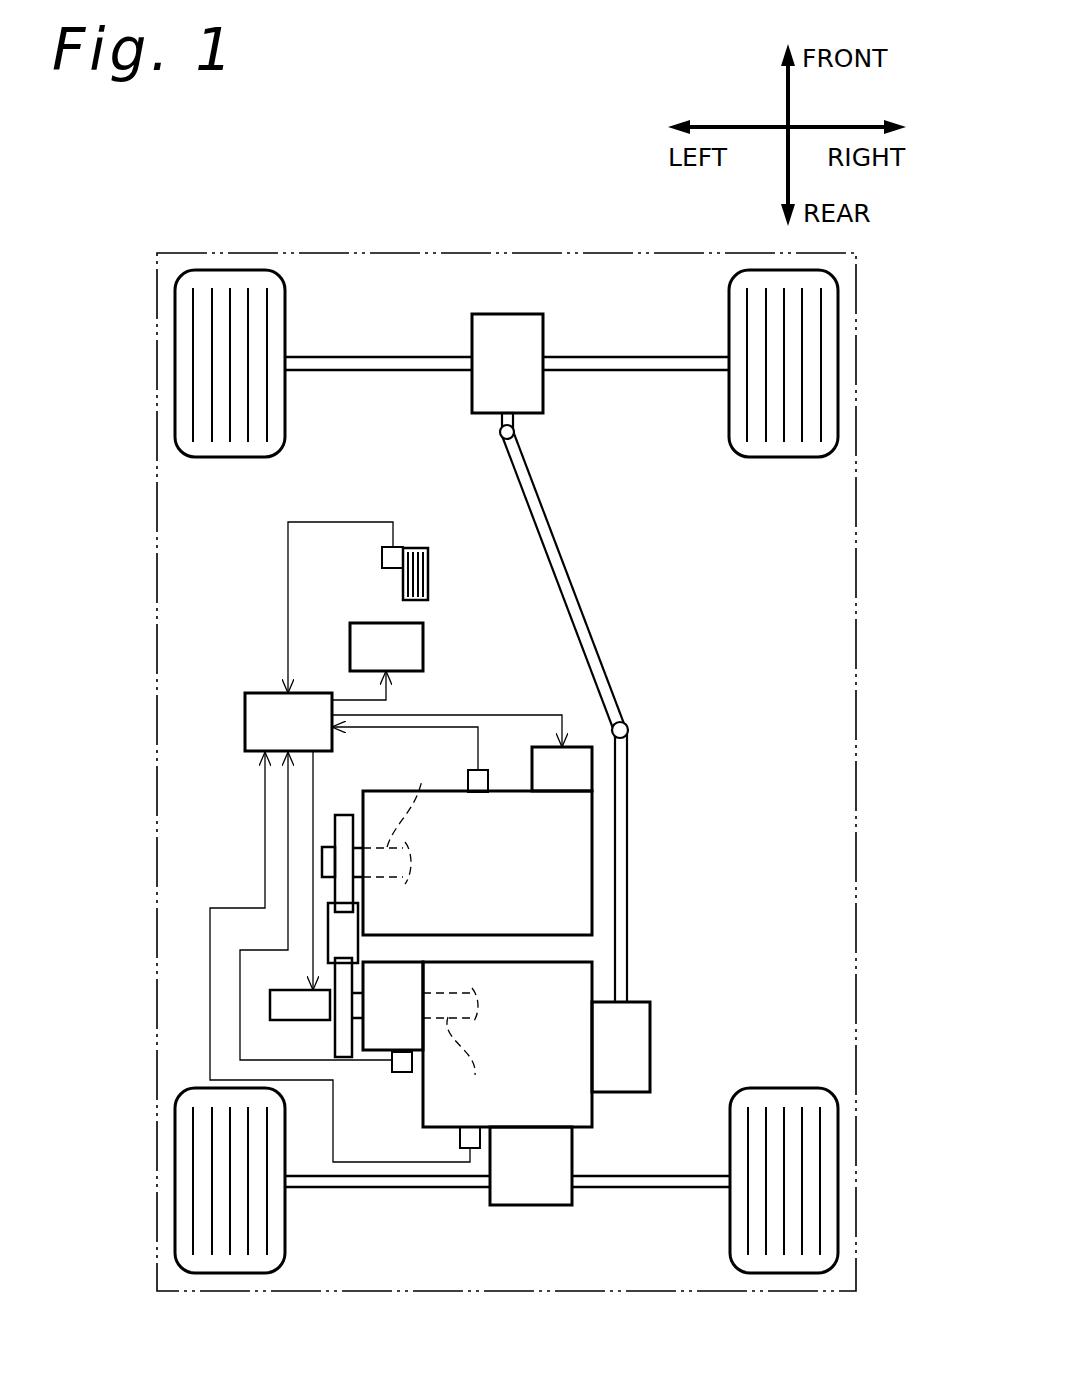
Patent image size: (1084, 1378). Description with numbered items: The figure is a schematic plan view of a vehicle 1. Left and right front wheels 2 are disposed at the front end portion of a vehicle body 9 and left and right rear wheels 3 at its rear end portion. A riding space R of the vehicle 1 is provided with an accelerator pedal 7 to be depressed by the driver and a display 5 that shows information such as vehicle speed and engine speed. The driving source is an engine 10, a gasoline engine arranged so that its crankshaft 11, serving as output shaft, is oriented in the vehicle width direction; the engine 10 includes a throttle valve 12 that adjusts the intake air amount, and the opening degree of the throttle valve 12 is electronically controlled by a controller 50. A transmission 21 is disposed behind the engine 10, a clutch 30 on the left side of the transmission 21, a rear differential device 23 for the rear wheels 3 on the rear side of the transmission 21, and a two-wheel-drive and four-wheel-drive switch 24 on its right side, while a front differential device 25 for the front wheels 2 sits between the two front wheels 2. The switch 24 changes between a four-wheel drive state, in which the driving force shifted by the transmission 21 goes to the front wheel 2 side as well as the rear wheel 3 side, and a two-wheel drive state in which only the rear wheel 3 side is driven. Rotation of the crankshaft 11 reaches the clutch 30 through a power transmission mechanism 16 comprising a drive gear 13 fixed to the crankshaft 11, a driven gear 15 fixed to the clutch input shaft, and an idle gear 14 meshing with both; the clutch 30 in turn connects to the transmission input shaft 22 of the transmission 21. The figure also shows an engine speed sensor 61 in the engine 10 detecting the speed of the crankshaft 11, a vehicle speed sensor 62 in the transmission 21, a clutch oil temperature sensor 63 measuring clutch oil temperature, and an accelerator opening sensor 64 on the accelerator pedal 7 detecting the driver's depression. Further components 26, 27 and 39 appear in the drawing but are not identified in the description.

The vehicle 1 is at (553, 707).
The front wheels 2 is at (285, 410).
The rear wheels 3 is at (285, 1233).
The display 5 is at (396, 662).
The accelerator pedal 7 is at (428, 572).
The vehicle body 9 is at (857, 680).
The engine 10 is at (463, 880).
The crankshaft 11 is at (402, 816).
The throttle valve 12 is at (546, 787).
The drive gear 13 is at (345, 815).
The idle gear 14 is at (347, 933).
The driven gear 15 is at (340, 1043).
The power transmission mechanism 16 is at (376, 946).
The transmission 21 is at (493, 1056).
The transmission input shaft 22 is at (458, 1050).
The rear differential device 23 is at (515, 1192).
The two-wheel-drive and four-wheel-drive switch 24 is at (605, 1062).
The front differential device 25 is at (494, 383).
The rear drive shaft 26 is at (443, 1182).
The propeller shaft 27 is at (623, 852).
The clutch 30 is at (377, 1025).
The actuator 39 is at (283, 1007).
The controller 50 is at (272, 737).
The engine speed sensor 61 is at (488, 780).
The vehicle speed sensor 62 is at (460, 1140).
The clutch oil temperature sensor 63 is at (402, 1072).
The accelerator opening sensor 64 is at (380, 558).
The riding space R is at (245, 615).